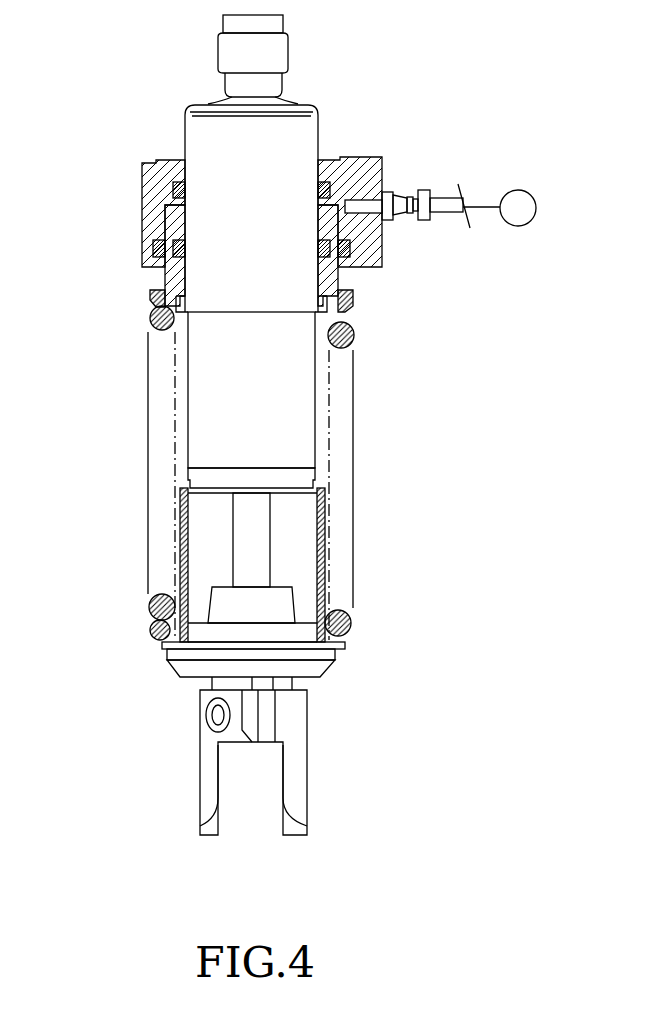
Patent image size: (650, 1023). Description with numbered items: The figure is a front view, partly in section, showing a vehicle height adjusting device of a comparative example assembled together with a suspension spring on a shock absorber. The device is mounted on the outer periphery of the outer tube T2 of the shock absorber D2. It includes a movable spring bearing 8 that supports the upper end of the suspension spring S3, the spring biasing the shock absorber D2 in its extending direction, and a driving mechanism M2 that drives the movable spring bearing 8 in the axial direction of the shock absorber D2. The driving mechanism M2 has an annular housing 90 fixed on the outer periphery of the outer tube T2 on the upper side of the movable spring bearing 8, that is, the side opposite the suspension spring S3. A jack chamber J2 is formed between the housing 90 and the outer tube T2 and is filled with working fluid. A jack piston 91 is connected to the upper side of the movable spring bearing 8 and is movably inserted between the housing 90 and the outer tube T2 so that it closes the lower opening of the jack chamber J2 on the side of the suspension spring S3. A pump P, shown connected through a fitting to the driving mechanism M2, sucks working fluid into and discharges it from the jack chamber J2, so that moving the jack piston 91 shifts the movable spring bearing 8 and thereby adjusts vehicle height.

The annular housing 90 is at (142, 172).
The jack chamber J2 is at (177, 212).
The driving mechanism M2 is at (134, 240).
The movable spring bearing 8 is at (153, 297).
The jack piston 91 is at (347, 279).
The pump P is at (530, 194).
The outer tube T2 is at (287, 423).
The shock absorber D2 is at (176, 452).
The suspension spring S3 is at (350, 625).